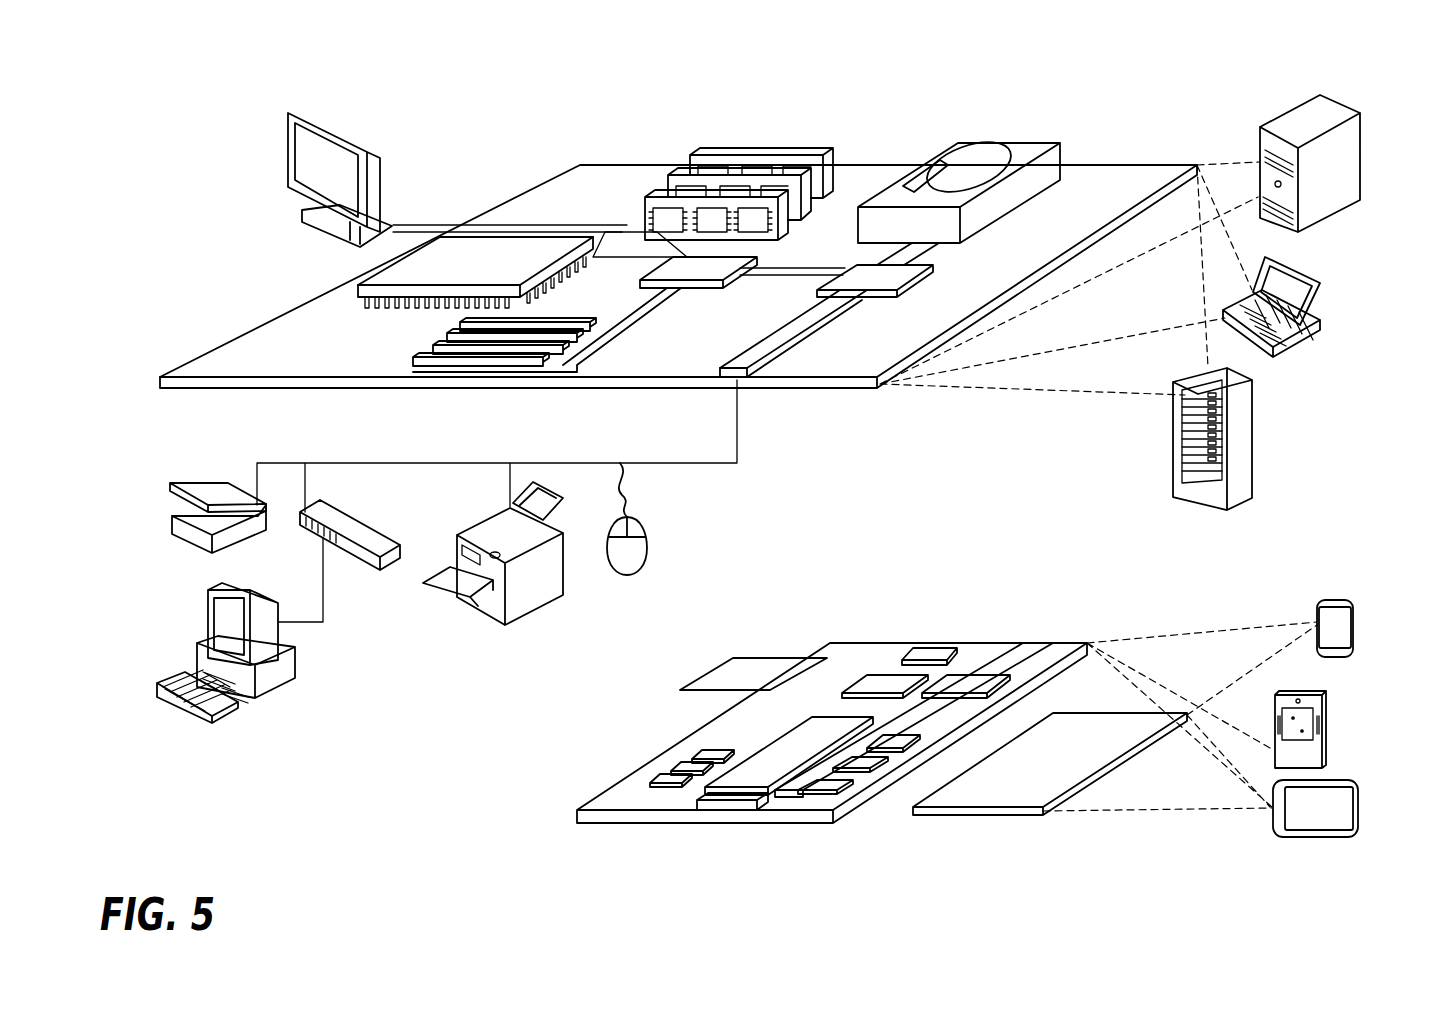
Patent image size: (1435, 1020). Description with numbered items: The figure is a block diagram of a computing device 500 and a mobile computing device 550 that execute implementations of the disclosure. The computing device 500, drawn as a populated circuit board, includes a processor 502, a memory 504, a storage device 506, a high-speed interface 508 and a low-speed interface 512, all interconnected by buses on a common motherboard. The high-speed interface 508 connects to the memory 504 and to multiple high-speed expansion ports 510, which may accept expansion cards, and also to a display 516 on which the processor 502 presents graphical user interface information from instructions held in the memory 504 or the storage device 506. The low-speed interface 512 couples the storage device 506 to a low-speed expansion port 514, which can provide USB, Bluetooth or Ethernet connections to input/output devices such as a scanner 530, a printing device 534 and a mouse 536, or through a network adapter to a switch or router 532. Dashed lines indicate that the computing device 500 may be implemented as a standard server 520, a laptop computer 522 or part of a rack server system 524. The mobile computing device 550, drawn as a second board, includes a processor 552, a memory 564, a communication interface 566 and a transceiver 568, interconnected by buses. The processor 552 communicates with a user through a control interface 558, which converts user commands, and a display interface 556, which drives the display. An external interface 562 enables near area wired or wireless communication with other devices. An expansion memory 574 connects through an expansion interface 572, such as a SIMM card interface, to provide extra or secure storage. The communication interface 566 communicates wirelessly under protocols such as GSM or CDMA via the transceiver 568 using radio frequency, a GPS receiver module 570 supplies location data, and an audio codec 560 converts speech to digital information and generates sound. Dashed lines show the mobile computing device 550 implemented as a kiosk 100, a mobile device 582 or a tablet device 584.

The computing device 500 is at (254, 44).
The processor 502 is at (360, 290).
The memory 504 is at (718, 158).
The storage device 506 is at (1010, 143).
The high-speed interface 508 is at (688, 266).
The high-speed expansion ports 510 is at (418, 351).
The low-speed interface 512 is at (858, 272).
The low-speed expansion port 514 is at (741, 380).
The display 516 is at (291, 112).
The standard server 520 is at (1262, 147).
The laptop computer 522 is at (1302, 283).
The rack server system 524 is at (1173, 478).
The scanner 530 is at (205, 481).
The switch or router 532 is at (363, 566).
The printing device 534 is at (540, 600).
The mouse 536 is at (646, 557).
The mobile computing device 550 is at (552, 856).
The processor 552 is at (785, 766).
The display interface 556 is at (846, 789).
The control interface 558 is at (868, 772).
The audio codec 560 is at (900, 740).
The external interface 562 is at (720, 811).
The memory 564 is at (665, 770).
The communication interface 566 is at (897, 682).
The transceiver 568 is at (975, 680).
The GPS receiver module 570 is at (930, 647).
The expansion interface 572 is at (813, 646).
The expansion memory 574 is at (733, 659).
The mobile device 582 is at (1331, 599).
The kiosk 100 is at (1328, 707).
The tablet device 584 is at (1362, 815).